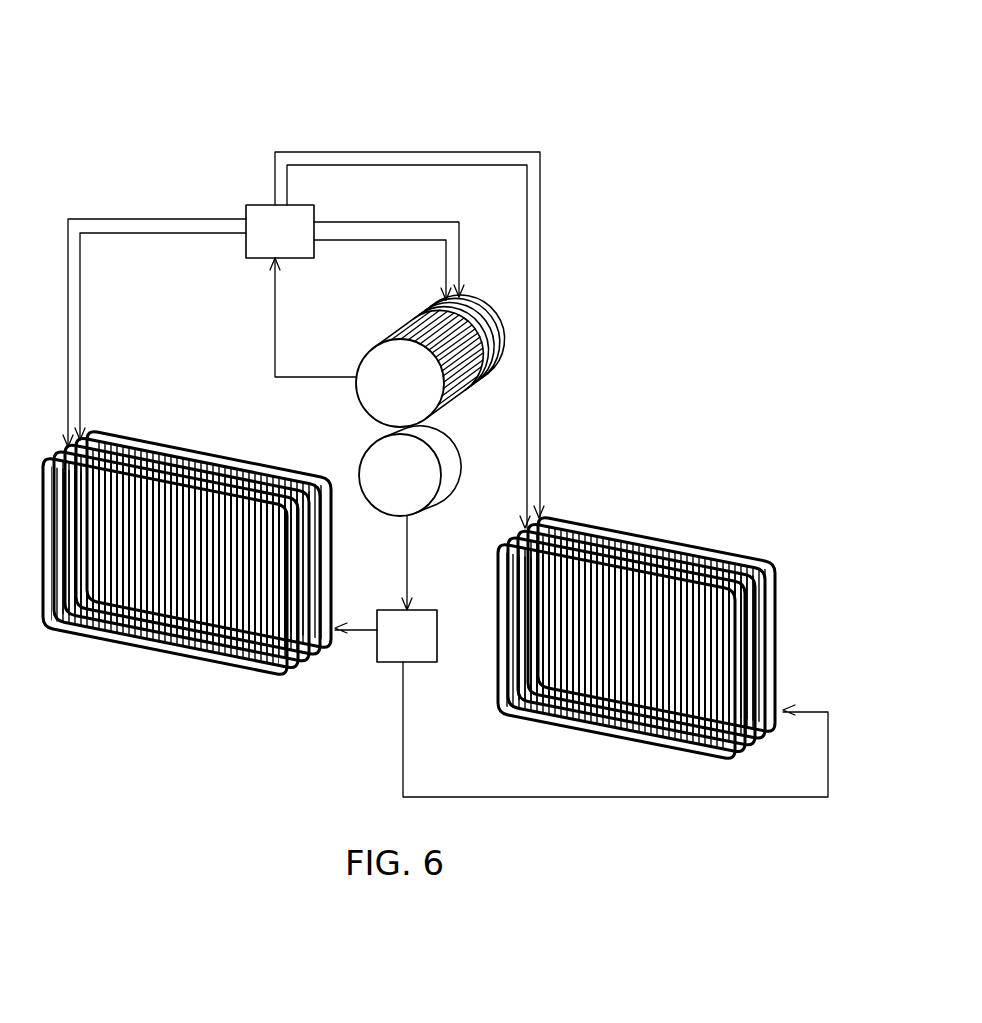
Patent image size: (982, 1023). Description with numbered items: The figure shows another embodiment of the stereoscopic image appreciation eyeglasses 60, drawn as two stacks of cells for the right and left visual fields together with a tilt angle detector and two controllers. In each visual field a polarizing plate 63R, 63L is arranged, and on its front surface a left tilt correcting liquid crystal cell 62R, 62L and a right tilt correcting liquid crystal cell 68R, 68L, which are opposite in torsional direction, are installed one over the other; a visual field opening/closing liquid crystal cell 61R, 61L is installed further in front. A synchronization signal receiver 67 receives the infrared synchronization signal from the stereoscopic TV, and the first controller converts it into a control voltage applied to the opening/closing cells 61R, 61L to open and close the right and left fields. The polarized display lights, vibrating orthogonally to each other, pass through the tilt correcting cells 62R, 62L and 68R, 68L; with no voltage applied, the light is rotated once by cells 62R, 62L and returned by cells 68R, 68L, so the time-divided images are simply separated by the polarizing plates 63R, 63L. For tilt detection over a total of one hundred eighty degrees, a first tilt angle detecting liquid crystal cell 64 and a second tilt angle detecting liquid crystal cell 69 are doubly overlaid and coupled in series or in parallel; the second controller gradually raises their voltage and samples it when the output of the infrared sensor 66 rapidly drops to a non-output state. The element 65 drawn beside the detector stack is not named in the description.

The image display device 60 is at (122, 195).
The visual field opening/closing liquid crystal cell 61L is at (121, 436).
The visual field opening/closing liquid crystal cell 61R is at (588, 520).
The left tilt correcting liquid crystal cell 62L is at (168, 442).
The left tilt correcting liquid crystal cell 62R is at (633, 530).
The polarizing plate 63L is at (264, 482).
The polarizing plate 63R is at (744, 556).
The first tilt angle detecting liquid crystal cell 64 is at (470, 304).
The light emitting elements 65 is at (446, 304).
The infrared sensor 66 is at (397, 340).
The synchronization signal receiver 67 is at (463, 451).
The right tilt correcting liquid crystal cell 68L is at (221, 470).
The right tilt correcting liquid crystal cell 68R is at (691, 564).
The second tilt angle detecting liquid crystal cell 69 is at (499, 342).